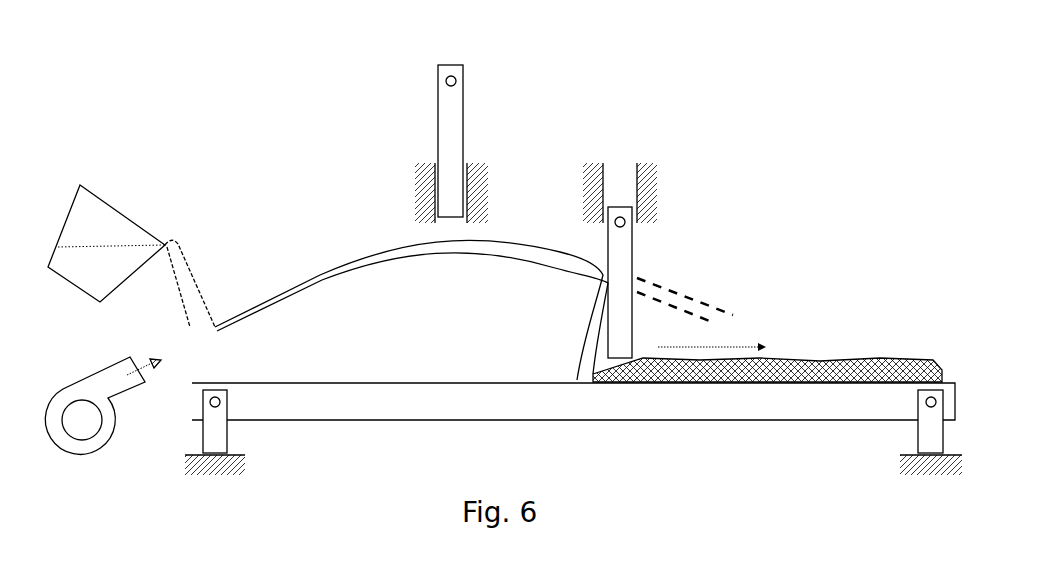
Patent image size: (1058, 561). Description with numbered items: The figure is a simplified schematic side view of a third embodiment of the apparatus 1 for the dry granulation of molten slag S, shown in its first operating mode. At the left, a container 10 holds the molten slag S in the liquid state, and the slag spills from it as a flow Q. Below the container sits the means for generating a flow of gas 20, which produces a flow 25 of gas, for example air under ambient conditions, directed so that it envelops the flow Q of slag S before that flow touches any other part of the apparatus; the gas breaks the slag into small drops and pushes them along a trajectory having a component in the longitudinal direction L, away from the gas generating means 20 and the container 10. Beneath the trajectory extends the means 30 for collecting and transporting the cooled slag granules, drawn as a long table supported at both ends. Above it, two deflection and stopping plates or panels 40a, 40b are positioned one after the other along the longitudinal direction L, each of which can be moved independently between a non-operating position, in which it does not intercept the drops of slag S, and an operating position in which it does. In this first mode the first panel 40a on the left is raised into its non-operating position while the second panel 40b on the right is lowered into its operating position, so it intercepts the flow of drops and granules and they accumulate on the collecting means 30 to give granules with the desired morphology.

The apparatus 1 is at (767, 160).
The container 10 is at (123, 213).
The molten slag S is at (111, 266).
The flow of slag Q is at (192, 257).
The means for generating a flow of gas 20 is at (102, 453).
The flow of gas 25 is at (126, 374).
The means for collecting and transporting the cooled slag granules 30 is at (573, 422).
The first plate or panel 40a is at (438, 140).
The second plate or panel 40b is at (633, 282).
The longitudinal direction L is at (720, 329).